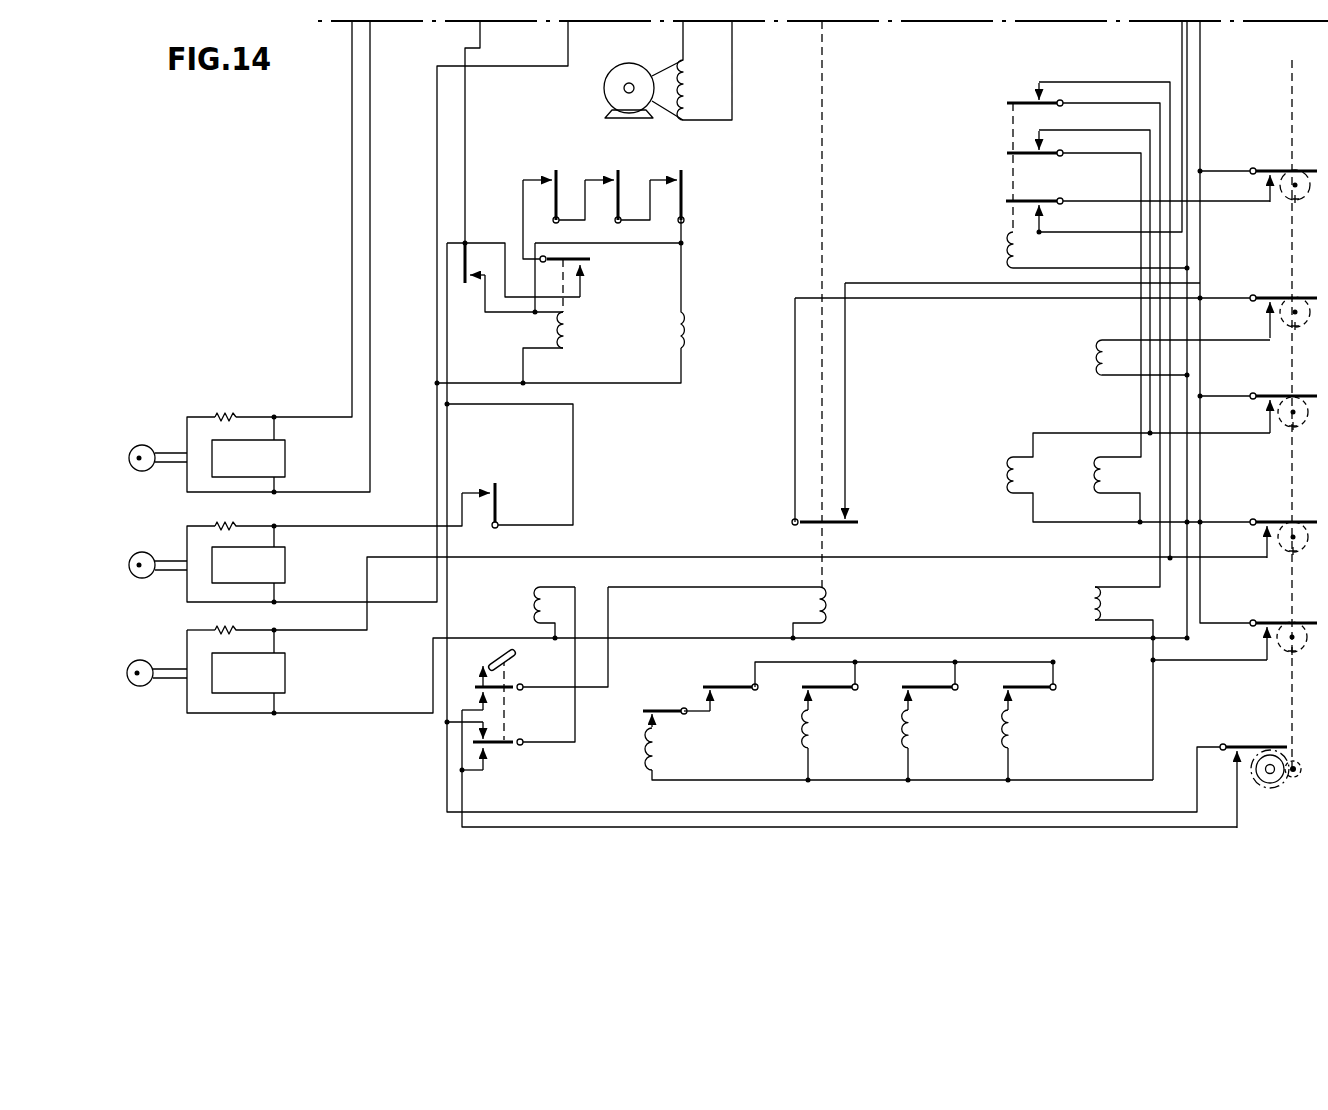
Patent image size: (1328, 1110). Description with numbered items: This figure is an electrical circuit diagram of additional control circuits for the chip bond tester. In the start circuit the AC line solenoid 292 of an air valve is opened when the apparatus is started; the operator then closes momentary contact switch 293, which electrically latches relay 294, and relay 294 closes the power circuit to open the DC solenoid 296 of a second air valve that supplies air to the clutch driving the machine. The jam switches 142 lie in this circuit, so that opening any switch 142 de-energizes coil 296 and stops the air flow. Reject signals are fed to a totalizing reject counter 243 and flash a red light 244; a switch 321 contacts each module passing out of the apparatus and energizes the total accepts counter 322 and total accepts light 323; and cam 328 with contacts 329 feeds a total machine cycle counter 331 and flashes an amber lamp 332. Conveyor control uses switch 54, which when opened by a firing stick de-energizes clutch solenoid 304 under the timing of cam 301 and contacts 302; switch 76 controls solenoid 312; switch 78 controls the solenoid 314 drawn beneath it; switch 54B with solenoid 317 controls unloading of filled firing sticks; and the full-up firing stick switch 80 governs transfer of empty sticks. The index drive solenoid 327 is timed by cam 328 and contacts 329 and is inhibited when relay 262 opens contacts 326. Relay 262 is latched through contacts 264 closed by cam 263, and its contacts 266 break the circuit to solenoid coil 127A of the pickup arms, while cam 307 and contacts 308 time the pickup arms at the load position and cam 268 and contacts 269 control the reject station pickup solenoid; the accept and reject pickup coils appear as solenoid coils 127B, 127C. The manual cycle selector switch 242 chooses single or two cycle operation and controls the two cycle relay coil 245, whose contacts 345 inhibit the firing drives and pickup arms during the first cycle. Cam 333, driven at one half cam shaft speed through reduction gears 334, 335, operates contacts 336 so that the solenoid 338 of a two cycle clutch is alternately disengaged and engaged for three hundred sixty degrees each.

The red light 244 is at (142, 445).
The totalizing reject counter 243 is at (287, 455).
The total accepts light 323 is at (140, 552).
The total accepts counter 322 is at (287, 565).
The amber lamp 332 is at (140, 660).
The total machine cycle counter 331 is at (287, 680).
The AC line solenoid 292 is at (684, 92).
The switches 142 is at (615, 167).
The momentary contact switch 293 is at (472, 287).
The relay 294 is at (568, 325).
The DC solenoid 296 is at (697, 335).
The switch 321 is at (502, 498).
The relay contacts 345 is at (842, 525).
The solenoid of two cycle clutch 338 is at (537, 602).
The manual selector cycle switch 242 is at (507, 747).
The two cycle relay coil 245 is at (828, 605).
The full-up firing stick switch 80 is at (657, 708).
The switch 76 is at (722, 682).
The switch 78 is at (822, 684).
The switch 54B is at (938, 684).
The switch 54 is at (1027, 695).
The solenoid 312 is at (648, 742).
The solenoid 314 is at (810, 728).
The solenoid 317 is at (910, 728).
The solenoid 304 is at (1010, 735).
The index drive solenoid 327 is at (1093, 600).
The contacts 266 is at (1018, 98).
The contacts 326 is at (1010, 148).
The relay 262 is at (1010, 252).
The contacts 264 is at (1270, 165).
The cam 263 is at (1289, 200).
The contacts 308 is at (1273, 292).
The cam 307 is at (1286, 340).
The contacts 269 is at (1258, 402).
The cam 268 is at (1283, 428).
The contacts 329 is at (1272, 515).
The cam 328 is at (1287, 553).
The contacts 302 is at (1258, 628).
The cam 301 is at (1285, 655).
The contacts 336 is at (1253, 745).
The cam 333 is at (1262, 784).
The gear reduction gear 334 is at (1297, 762).
The gear reduction gear 335 is at (1280, 788).
The solenoid coil 127A is at (1097, 356).
The accept relay 127B is at (1104, 477).
The reject relay 127C is at (1017, 475).